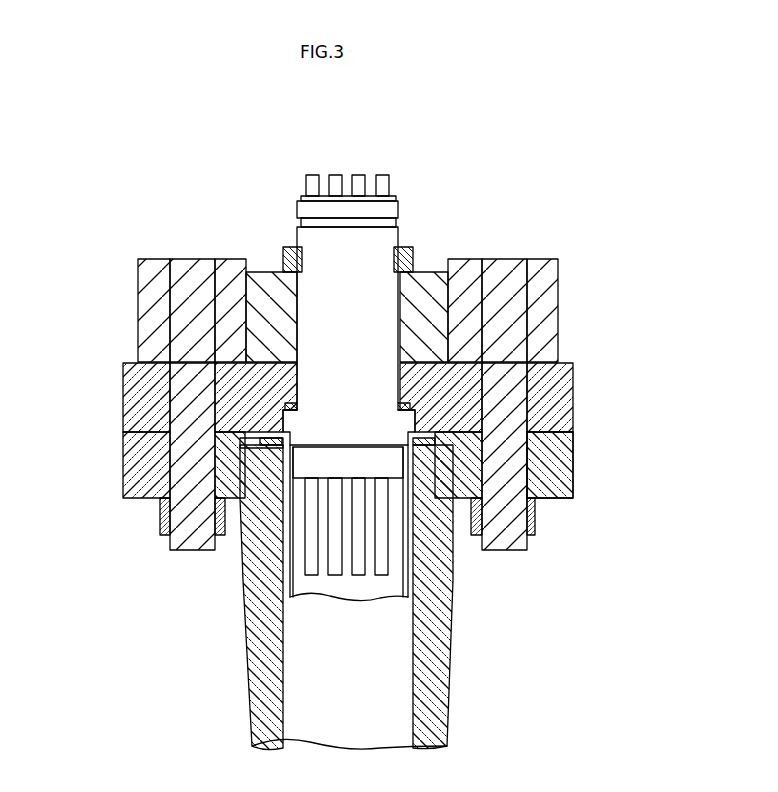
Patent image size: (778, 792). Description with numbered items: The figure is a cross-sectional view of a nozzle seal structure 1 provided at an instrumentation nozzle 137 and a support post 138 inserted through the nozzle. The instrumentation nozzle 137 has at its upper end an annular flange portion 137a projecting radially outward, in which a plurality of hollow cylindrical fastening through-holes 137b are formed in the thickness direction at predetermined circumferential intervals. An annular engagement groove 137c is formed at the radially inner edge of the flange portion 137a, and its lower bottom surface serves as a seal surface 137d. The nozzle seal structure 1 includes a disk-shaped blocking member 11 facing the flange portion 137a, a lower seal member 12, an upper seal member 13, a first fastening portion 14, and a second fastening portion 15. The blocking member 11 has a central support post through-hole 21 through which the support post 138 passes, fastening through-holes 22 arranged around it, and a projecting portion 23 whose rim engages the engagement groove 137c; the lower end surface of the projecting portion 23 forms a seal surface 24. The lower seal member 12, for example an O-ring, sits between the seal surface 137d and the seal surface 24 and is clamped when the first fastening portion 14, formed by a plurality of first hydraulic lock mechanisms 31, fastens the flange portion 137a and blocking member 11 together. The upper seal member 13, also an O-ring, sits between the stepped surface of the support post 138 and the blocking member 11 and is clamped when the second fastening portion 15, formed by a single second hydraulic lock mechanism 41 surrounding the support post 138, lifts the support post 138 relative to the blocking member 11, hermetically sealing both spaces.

The nozzle seal structure 1 is at (517, 180).
The blocking member 11 is at (573, 418).
The lower seal member 12 is at (278, 440).
The upper seal member 13 is at (290, 404).
The first fastening portion 14 is at (566, 270).
The second fastening portion 15 is at (428, 272).
The support post through-hole 21 is at (390, 378).
The fastening through-holes 22 is at (168, 393).
The projecting portion 23 is at (283, 432).
The seal surface 24 is at (433, 440).
The first hydraulic lock mechanisms 31 is at (153, 259).
The second hydraulic lock mechanism 41 is at (263, 272).
The instrumentation nozzle 137 is at (447, 680).
The flange portion 137a is at (573, 483).
The fastening through-holes 137b is at (168, 460).
The engagement groove 137c is at (265, 432).
The seal surface 137d is at (402, 447).
The support post 138 is at (352, 245).